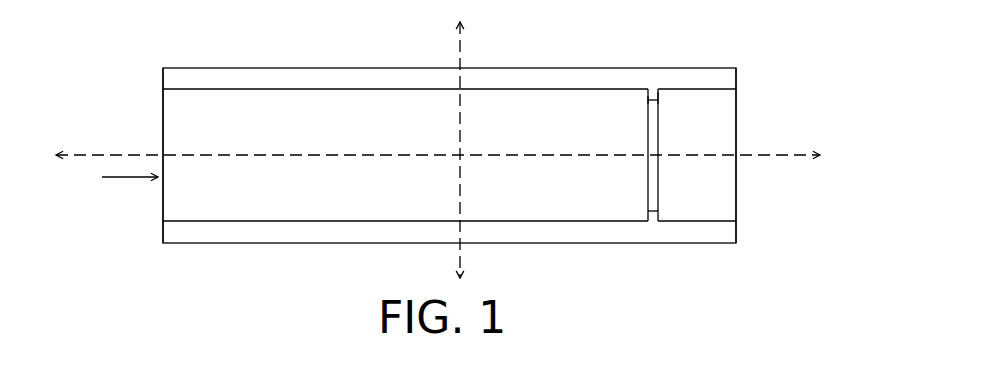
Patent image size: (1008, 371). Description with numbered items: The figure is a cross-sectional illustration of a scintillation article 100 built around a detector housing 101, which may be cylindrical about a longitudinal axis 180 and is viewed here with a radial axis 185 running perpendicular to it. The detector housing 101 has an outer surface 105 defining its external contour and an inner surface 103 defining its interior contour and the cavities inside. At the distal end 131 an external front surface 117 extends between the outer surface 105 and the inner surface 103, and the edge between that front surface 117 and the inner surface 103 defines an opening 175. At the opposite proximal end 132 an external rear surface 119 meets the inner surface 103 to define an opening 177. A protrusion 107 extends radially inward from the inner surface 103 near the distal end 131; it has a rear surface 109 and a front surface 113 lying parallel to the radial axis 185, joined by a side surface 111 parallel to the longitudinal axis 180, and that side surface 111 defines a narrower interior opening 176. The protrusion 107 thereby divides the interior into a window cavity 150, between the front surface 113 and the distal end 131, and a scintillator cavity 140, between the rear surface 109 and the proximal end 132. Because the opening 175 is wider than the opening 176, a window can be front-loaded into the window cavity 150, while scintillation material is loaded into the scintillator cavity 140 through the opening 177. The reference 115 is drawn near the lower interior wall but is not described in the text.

The scintillation article 100 is at (423, 125).
The detector housing 101 is at (212, 80).
The inner surface 103 is at (259, 89).
The outer surface 105 is at (316, 244).
The protrusion 107 is at (653, 92).
The rear surface 109 is at (646, 96).
The side surface 111 is at (647, 100).
The front surface 113 is at (660, 95).
The bottom inner surface 115 is at (703, 221).
The external front surface 117 is at (737, 77).
The external rear surface 119 is at (162, 80).
The distal end 131 is at (745, 250).
The proximal end 132 is at (160, 249).
The scintillator cavity 140 is at (228, 178).
The window cavity 150 is at (707, 173).
The opening 175 is at (739, 123).
The opening 176 is at (652, 193).
The opening 177 is at (111, 177).
The longitudinal axis 180 is at (793, 155).
The radial axis 185 is at (460, 55).